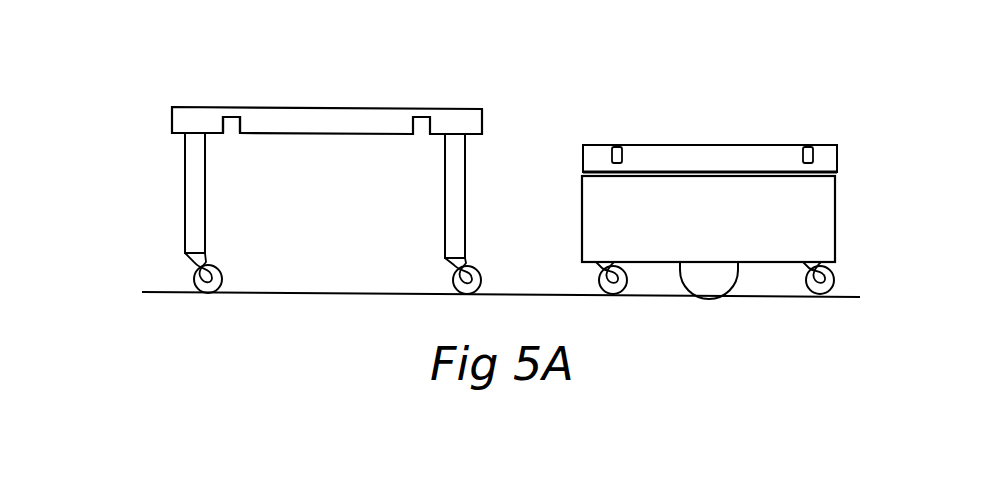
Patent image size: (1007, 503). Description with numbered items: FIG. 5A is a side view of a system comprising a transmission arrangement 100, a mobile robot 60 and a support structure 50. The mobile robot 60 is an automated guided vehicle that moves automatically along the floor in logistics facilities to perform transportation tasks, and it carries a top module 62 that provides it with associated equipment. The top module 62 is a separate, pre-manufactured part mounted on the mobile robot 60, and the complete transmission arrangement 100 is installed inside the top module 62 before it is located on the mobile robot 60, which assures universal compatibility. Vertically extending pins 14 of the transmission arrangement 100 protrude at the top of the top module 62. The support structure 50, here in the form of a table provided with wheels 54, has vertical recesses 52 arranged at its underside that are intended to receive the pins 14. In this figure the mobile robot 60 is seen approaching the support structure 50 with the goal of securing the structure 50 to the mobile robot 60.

The support structure 50 is at (345, 108).
The vertical recesses 52 is at (233, 128).
The wheels 54 is at (203, 277).
The mobile robot 60 is at (582, 218).
The top module 62 is at (593, 145).
The vertically extending pins 14 is at (618, 145).
The transmission arrangement 100 is at (698, 145).